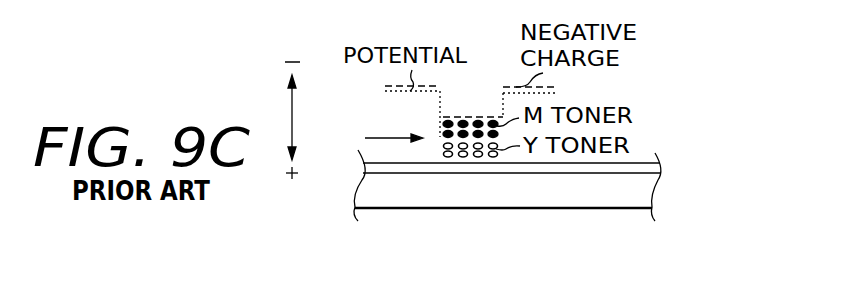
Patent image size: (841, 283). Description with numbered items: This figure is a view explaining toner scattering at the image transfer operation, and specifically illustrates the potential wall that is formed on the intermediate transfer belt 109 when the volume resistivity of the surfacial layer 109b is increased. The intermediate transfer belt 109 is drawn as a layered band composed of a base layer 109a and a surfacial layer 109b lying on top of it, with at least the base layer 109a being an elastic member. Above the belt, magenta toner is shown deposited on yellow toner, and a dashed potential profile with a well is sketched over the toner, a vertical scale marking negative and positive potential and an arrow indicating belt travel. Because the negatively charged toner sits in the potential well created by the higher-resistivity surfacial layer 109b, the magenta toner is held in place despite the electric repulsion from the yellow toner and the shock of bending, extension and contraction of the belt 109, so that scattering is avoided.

The intermediate transfer belt 109 is at (532, 222).
The base layer 109a is at (458, 192).
The surfacial layer 109b is at (400, 168).